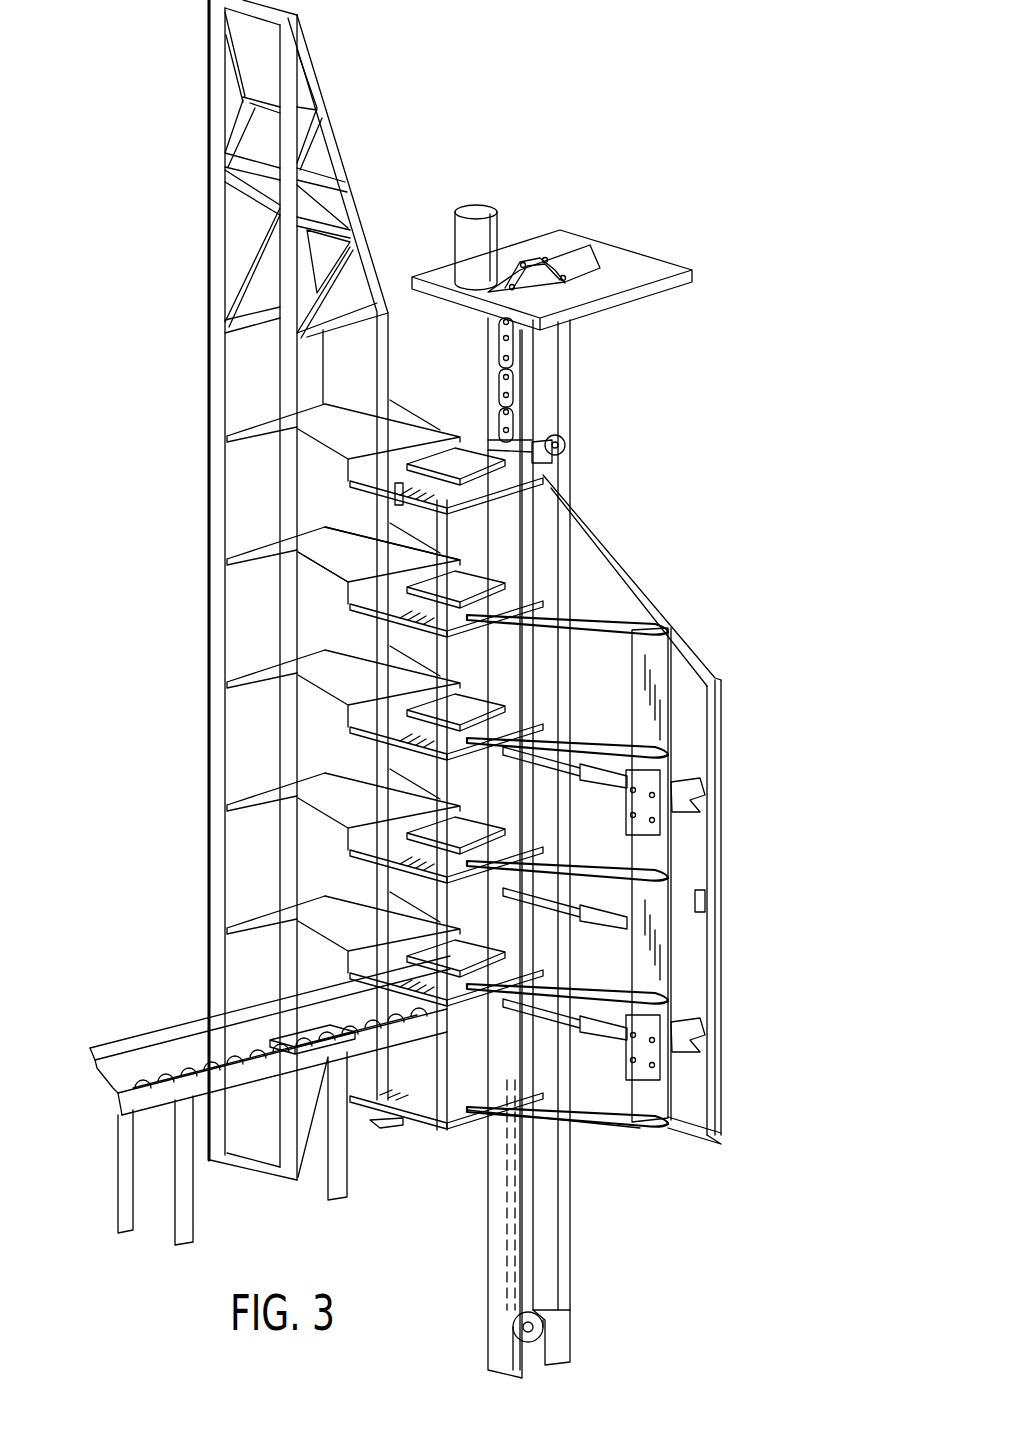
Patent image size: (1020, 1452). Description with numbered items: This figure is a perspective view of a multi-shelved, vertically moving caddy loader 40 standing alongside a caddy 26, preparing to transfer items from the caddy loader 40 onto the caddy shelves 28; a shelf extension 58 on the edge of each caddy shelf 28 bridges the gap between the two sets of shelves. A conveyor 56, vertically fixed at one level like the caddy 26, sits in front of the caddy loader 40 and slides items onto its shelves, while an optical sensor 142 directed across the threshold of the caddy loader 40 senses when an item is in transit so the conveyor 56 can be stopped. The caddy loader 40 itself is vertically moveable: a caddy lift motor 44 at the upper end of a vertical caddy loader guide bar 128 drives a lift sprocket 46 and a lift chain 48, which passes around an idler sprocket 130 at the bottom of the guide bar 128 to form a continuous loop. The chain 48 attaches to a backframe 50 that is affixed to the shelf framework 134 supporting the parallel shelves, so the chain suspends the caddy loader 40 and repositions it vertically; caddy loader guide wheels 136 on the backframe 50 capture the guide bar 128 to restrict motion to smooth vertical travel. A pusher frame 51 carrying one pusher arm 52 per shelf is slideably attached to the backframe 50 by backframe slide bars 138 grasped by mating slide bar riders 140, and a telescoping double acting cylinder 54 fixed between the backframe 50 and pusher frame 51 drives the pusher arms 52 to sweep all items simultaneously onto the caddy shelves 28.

The caddy 26 is at (153, 532).
The caddy shelves 28 is at (270, 927).
The caddy loader 40 is at (617, 530).
The caddy lift motor 44 is at (478, 215).
The lift sprocket 46 is at (595, 262).
The lift chain 48 is at (512, 390).
The backframe 50 is at (660, 625).
The pusher frame 51 is at (650, 1093).
The pusher arms 52 is at (582, 1123).
The telescoping double acting cylinder 54 is at (525, 890).
The conveyor 56 is at (185, 1005).
The shelf extension 58 is at (317, 703).
The vertical caddy loader guide bar 128 is at (543, 1263).
The idler sprocket 130 is at (513, 1340).
The shelf framework 134 is at (567, 567).
The caddy loader guide wheels 136 is at (577, 497).
The backframe slide bars 138 is at (700, 805).
The slide bar riders 140 is at (677, 830).
The optical sensor 142 is at (403, 492).